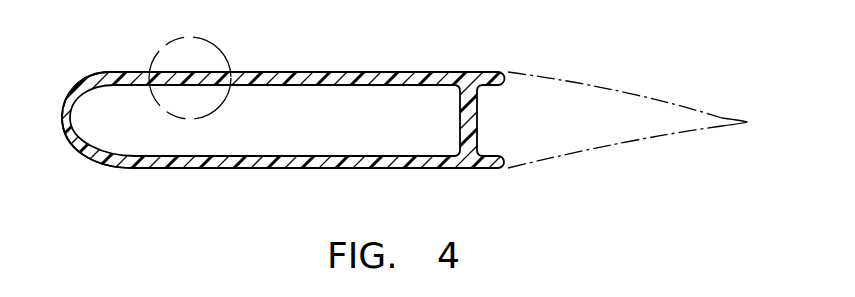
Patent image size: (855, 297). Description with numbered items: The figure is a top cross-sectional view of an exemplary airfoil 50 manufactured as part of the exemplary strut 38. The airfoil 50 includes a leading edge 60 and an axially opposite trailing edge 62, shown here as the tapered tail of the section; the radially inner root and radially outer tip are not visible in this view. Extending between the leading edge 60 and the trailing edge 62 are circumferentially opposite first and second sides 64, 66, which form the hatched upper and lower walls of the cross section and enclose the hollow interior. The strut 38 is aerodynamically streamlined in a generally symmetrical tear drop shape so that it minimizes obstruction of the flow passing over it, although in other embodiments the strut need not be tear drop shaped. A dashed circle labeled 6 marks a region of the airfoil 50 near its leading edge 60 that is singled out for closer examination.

The detail circle (FIG. 6 region) 6 is at (196, 37).
The strut 38 is at (448, 50).
The airfoil 50 is at (151, 199).
The leading edge 60 is at (60, 122).
The trailing edge 62 is at (750, 121).
The first side 64 is at (253, 170).
The second side 66 is at (291, 72).